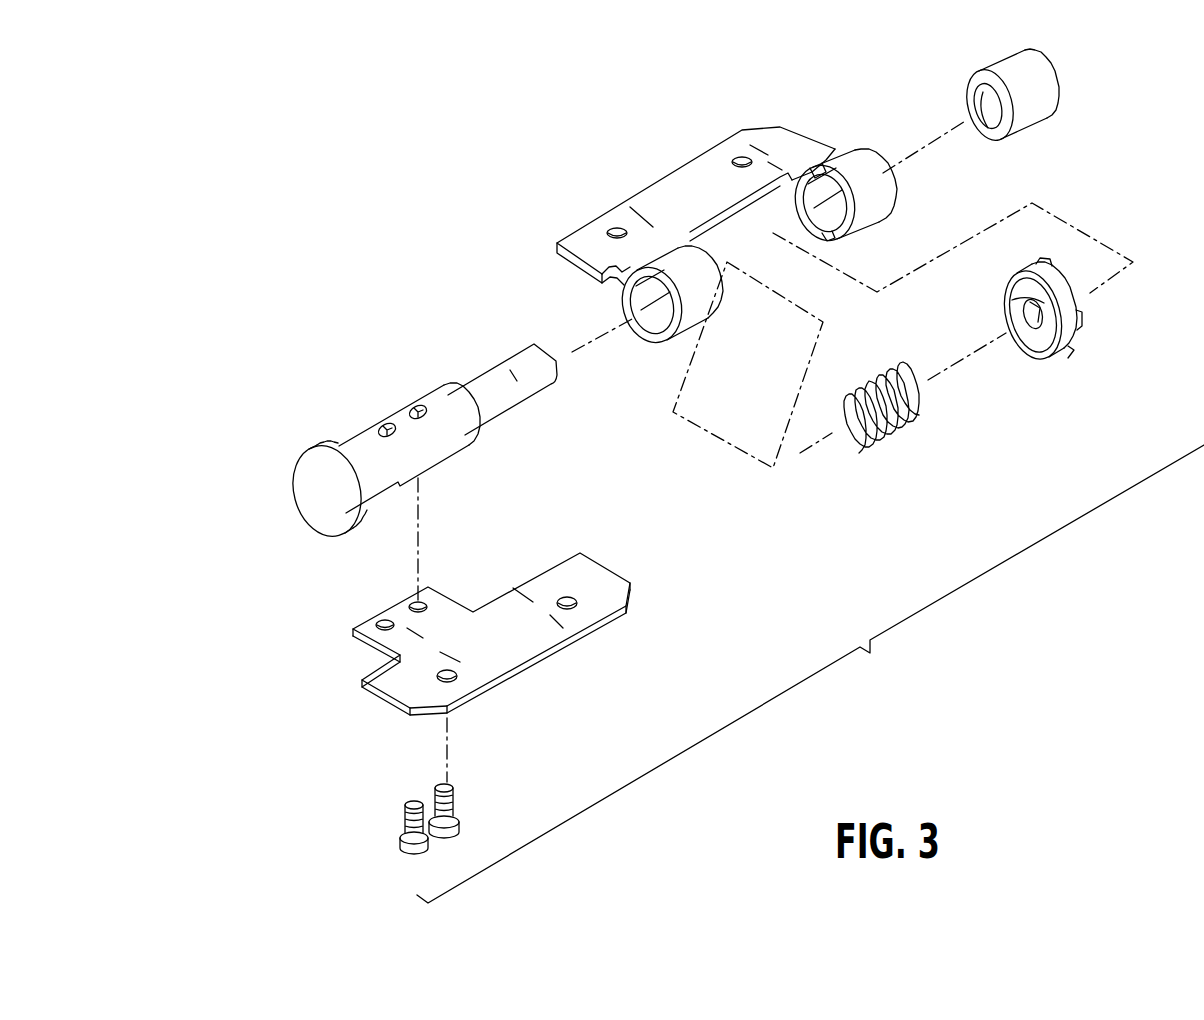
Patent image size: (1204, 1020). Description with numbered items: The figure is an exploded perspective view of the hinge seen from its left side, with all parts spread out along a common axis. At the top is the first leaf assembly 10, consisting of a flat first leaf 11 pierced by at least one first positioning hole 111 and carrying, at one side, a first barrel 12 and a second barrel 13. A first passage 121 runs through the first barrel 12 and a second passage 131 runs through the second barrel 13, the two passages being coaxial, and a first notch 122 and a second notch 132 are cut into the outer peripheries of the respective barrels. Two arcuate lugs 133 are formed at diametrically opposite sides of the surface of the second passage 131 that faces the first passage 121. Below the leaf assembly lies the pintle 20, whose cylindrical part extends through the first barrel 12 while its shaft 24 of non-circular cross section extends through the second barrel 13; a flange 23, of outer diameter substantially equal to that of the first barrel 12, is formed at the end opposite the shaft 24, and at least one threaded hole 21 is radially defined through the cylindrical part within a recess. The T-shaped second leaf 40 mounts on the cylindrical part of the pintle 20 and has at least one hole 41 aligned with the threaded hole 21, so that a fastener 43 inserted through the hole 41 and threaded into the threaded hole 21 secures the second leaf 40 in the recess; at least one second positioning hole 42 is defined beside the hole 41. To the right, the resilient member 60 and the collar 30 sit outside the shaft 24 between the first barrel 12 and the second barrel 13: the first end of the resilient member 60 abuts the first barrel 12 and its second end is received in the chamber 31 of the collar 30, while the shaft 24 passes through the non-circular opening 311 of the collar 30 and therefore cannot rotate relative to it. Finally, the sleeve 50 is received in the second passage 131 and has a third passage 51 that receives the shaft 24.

The first leaf assembly 10 is at (683, 180).
The first leaf 11 is at (566, 241).
The first positioning hole 111 is at (608, 226).
The first barrel 12 is at (633, 338).
The first passage 121 is at (662, 330).
The first notch 122 is at (618, 284).
The second barrel 13 is at (893, 203).
The second passage 131 is at (835, 240).
The second notch 132 is at (830, 160).
The arcuate lugs 133 is at (822, 172).
The pintle 20 is at (350, 437).
The threaded hole 21 is at (413, 409).
The flange 23 is at (315, 508).
The shaft 24 is at (485, 383).
The collar 30 is at (1082, 344).
The chamber 31 is at (1020, 300).
The non-circular opening 311 is at (1047, 325).
The second leaf 40 is at (612, 580).
The hole 41 is at (410, 603).
The second positioning hole 42 is at (566, 601).
The fastener 43 is at (453, 805).
The sleeve 50 is at (1057, 93).
The third passage 51 is at (988, 115).
The resilient member 60 is at (903, 438).